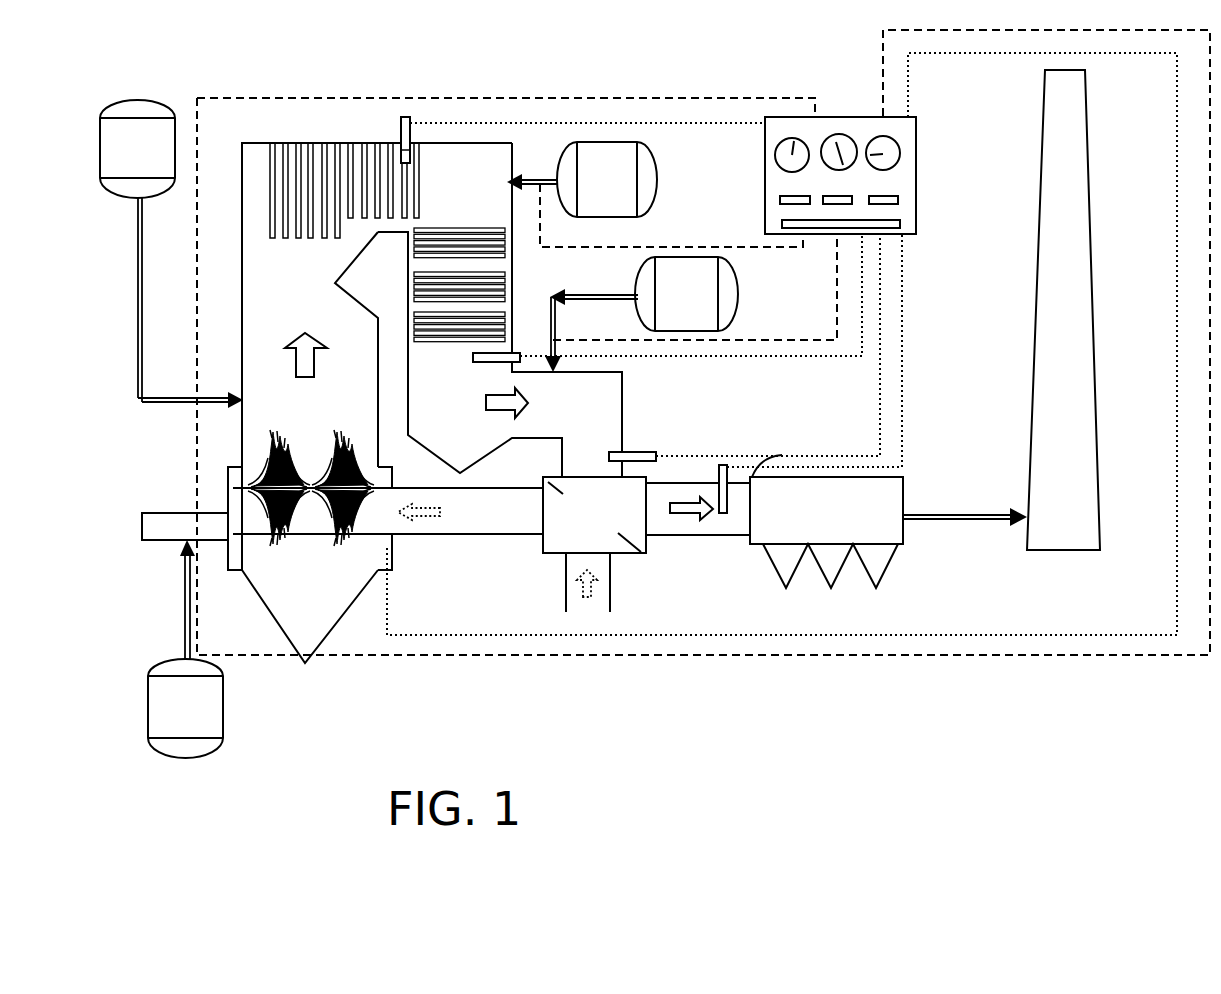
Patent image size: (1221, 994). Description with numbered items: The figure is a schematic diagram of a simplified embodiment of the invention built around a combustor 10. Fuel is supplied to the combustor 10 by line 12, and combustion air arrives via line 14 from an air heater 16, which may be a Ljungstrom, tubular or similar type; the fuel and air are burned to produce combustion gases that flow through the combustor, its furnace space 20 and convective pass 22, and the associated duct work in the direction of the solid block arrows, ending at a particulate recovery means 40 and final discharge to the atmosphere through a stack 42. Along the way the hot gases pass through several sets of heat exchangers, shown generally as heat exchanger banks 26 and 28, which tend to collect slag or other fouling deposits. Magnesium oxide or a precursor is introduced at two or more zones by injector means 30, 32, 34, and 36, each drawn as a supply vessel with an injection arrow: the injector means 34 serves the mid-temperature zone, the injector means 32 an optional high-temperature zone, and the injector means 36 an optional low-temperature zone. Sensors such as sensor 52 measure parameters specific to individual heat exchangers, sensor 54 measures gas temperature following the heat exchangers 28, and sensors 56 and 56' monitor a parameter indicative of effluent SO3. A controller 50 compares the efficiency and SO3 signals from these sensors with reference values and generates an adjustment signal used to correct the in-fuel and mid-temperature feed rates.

The combustor 10 is at (256, 120).
The fuel line 12 is at (195, 517).
The combustion air line 14 is at (388, 511).
The air heater 16 is at (646, 544).
The furnace 20 is at (402, 403).
The convective pass / boiler section 22 is at (537, 310).
The heat exchanger bank 26 is at (346, 160).
The heat exchanger bank 28 is at (512, 266).
The injector means 30 is at (185, 649).
The injector means 32 is at (171, 254).
The injector means 34 is at (582, 179).
The injector means 36 is at (641, 314).
The particulate recovery means 40 is at (888, 532).
The stack 42 is at (1063, 310).
The controller 50 is at (857, 106).
The sensor 52 is at (400, 130).
The sensor 54 is at (519, 352).
The sensor 56 is at (649, 432).
The sensor 56' is at (754, 466).